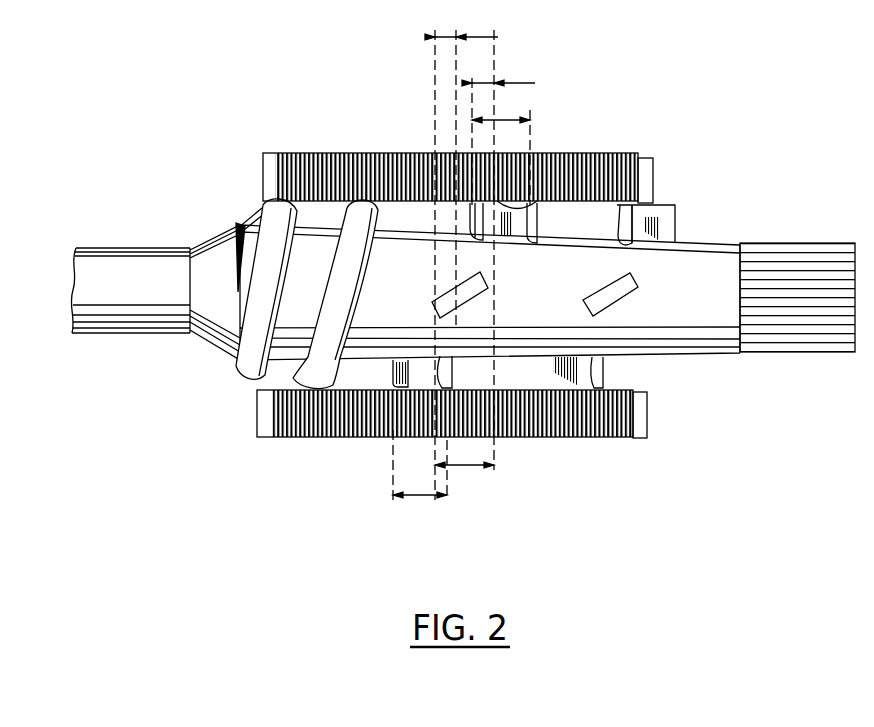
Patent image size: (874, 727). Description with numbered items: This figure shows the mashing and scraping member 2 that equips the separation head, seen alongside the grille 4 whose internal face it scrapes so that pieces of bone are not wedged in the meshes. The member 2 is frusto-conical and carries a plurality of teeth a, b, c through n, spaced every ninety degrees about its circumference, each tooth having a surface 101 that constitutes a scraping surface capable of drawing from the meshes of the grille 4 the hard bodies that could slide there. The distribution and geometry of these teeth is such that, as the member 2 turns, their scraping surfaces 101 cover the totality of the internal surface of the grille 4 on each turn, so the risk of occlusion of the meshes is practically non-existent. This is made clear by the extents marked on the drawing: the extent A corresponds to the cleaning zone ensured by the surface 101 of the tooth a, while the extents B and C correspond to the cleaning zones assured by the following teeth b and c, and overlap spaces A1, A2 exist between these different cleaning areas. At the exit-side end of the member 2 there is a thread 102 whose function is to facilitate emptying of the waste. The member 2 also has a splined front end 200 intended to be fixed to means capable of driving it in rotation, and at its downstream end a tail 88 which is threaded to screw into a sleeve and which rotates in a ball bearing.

The mashing and scraping member 2 is at (226, 203).
The grille 4 is at (340, 180).
The tail 88 is at (160, 300).
The scraping surface 101 is at (396, 388).
The thread 102 is at (303, 387).
The splined front end 200 is at (784, 327).
The tooth a is at (397, 367).
The tooth b is at (485, 306).
The tooth c is at (537, 227).
The tooth n is at (660, 222).
The extent of cleaning zone A is at (420, 484).
The overlap space A1 is at (463, 24).
The overlap space A2 is at (500, 72).
The extent of cleaning zone B is at (464, 454).
The extent of cleaning zone C is at (501, 109).